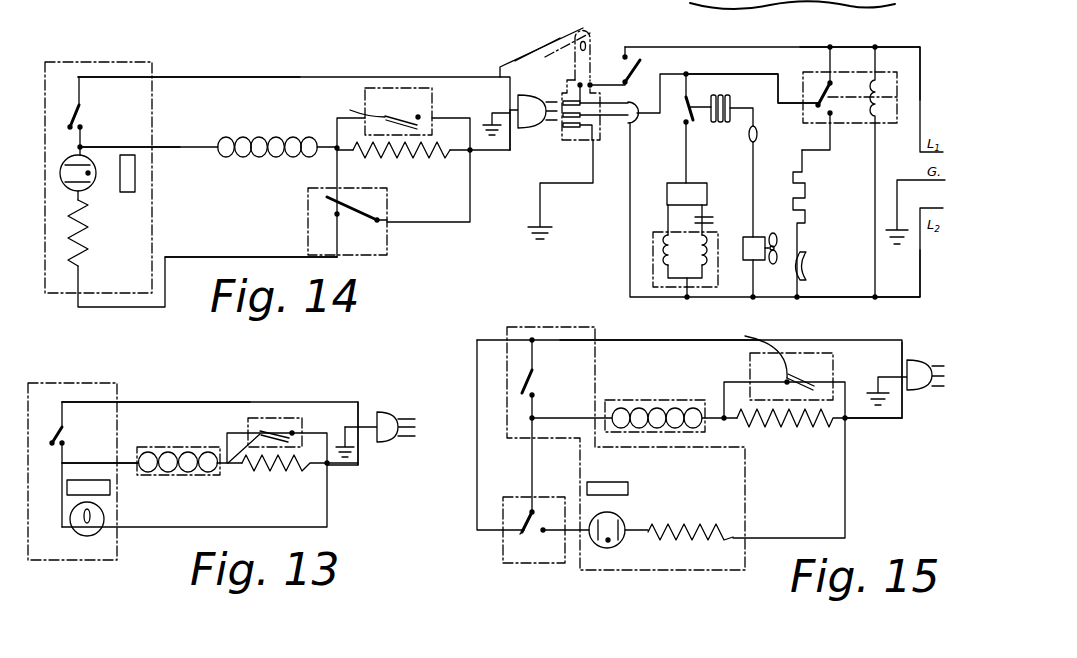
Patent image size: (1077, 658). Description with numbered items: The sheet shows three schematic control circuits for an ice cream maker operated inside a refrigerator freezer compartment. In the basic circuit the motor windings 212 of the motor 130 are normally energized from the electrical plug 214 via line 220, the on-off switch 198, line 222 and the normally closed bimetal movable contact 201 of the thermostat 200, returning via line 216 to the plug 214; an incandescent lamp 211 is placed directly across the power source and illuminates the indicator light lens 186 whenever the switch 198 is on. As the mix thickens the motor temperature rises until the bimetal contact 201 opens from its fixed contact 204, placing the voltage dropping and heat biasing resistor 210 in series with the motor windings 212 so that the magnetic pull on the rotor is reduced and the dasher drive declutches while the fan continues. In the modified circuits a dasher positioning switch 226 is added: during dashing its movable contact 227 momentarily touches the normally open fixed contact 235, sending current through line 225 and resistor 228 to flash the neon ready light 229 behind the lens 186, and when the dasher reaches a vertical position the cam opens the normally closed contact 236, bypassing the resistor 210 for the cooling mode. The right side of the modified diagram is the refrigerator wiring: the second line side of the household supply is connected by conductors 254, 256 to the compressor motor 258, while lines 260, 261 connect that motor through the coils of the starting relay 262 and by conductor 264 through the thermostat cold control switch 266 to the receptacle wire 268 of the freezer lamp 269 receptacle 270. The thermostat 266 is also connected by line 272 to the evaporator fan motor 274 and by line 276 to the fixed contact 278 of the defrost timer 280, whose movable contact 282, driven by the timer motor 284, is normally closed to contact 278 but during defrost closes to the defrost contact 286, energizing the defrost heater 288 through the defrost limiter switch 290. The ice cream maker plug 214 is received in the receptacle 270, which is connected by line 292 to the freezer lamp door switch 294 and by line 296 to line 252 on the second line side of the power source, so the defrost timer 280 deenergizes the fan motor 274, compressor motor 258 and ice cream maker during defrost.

In FIG. 13, the motor 130 is at (175, 440).
In FIG. 15, the motor 130 is at (706, 426).
In FIG. 14, the indicator light lens 186 is at (135, 180).
In FIG. 13, the indicator light lens 186 is at (110, 487).
In FIG. 15, the indicator light lens 186 is at (628, 483).
In FIG. 14, the on-off switch 198 is at (77, 104).
In FIG. 13, the on-off switch 198 is at (63, 427).
In FIG. 15, the on-off switch 198 is at (527, 382).
In FIG. 14, the thermostat 200 is at (417, 89).
In FIG. 13, the thermostat 200 is at (278, 417).
In FIG. 15, the thermostat 200 is at (808, 353).
In FIG. 14, the bimetal movable contact 201 is at (387, 115).
In FIG. 13, the bimetal movable contact 201 is at (285, 431).
In FIG. 15, the bimetal movable contact 201 is at (813, 378).
In FIG. 14, the fixed contact 204 is at (343, 104).
In FIG. 13, the fixed contact 204 is at (234, 465).
In FIG. 15, the fixed contact 204 is at (749, 346).
In FIG. 14, the voltage dropping and heat biasing resistor 210 is at (408, 154).
In FIG. 13, the voltage dropping and heat biasing resistor 210 is at (267, 468).
In FIG. 15, the voltage dropping and heat biasing resistor 210 is at (790, 424).
In FIG. 13, the incandescent lamp 211 is at (102, 532).
In FIG. 14, the motor windings 212 is at (268, 136).
In FIG. 13, the motor windings 212 is at (198, 451).
In FIG. 15, the motor windings 212 is at (667, 401).
In FIG. 14, the electrical plug 214 is at (512, 109).
In FIG. 13, the electrical plug 214 is at (385, 412).
In FIG. 15, the electrical plug 214 is at (914, 389).
In FIG. 14, the line 216 is at (505, 152).
In FIG. 13, the line 216 is at (346, 468).
In FIG. 15, the line 216 is at (873, 421).
In FIG. 14, the line 220 is at (231, 76).
In FIG. 13, the line 220 is at (197, 401).
In FIG. 15, the line 220 is at (674, 342).
In FIG. 14, the line 222 is at (183, 146).
In FIG. 13, the line 222 is at (132, 462).
In FIG. 15, the line 222 is at (576, 417).
In FIG. 14, the line 225 is at (196, 257).
In FIG. 14, the dasher positioning switch 226 is at (387, 241).
In FIG. 15, the dasher positioning switch 226 is at (503, 513).
In FIG. 14, the movable contact 227 is at (378, 224).
In FIG. 15, the movable contact 227 is at (521, 533).
In FIG. 14, the resistor 228 is at (84, 262).
In FIG. 15, the resistor 228 is at (702, 512).
In FIG. 14, the neon ready light 229 is at (88, 192).
In FIG. 15, the neon ready light 229 is at (612, 548).
In FIG. 14, the normally open fixed contact 235 is at (336, 215).
In FIG. 15, the normally open fixed contact 235 is at (544, 527).
In FIG. 14, the normally closed contact 236 is at (329, 195).
In FIG. 15, the normally closed contact 236 is at (516, 527).
In FIG. 14, the line 252 is at (920, 62).
In FIG. 14, the conductor 254 is at (921, 287).
In FIG. 14, the conductor 256 is at (684, 293).
In FIG. 14, the compressor motor 258 is at (653, 252).
In FIG. 14, the line 260 is at (730, 190).
In FIG. 14, the line 261 is at (668, 218).
In FIG. 14, the starting relay 262 is at (752, 143).
In FIG. 14, the conductor 264 is at (681, 133).
In FIG. 14, the thermostat cold control switch 266 is at (700, 115).
In FIG. 14, the receptacle wire 268 is at (630, 126).
In FIG. 14, the freezer lamp 269 is at (545, 56).
In FIG. 14, the receptacle 270 is at (587, 141).
In FIG. 14, the line 272 is at (754, 200).
In FIG. 14, the evaporator fan motor 274 is at (768, 263).
In FIG. 14, the line 276 is at (770, 76).
In FIG. 14, the fixed contact 278 is at (816, 107).
In FIG. 14, the defrost timer 280 is at (852, 72).
In FIG. 14, the movable contact 282 is at (828, 85).
In FIG. 14, the timer motor 284 is at (872, 113).
In FIG. 14, the defrost contact 286 is at (830, 116).
In FIG. 14, the defrost heater 288 is at (806, 206).
In FIG. 14, the defrost limiter switch 290 is at (850, 233).
In FIG. 14, the line 292 is at (612, 77).
In FIG. 14, the freezer lamp door switch 294 is at (680, 43).
In FIG. 14, the line 296 is at (748, 10).